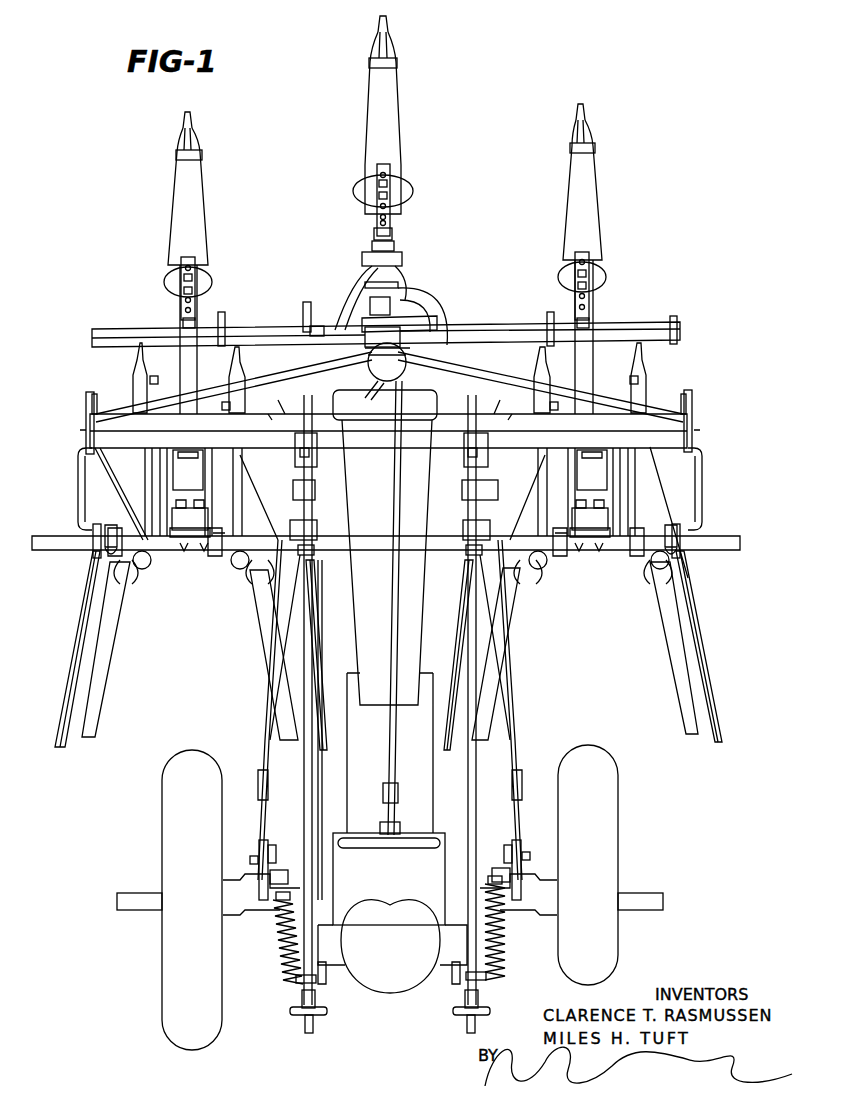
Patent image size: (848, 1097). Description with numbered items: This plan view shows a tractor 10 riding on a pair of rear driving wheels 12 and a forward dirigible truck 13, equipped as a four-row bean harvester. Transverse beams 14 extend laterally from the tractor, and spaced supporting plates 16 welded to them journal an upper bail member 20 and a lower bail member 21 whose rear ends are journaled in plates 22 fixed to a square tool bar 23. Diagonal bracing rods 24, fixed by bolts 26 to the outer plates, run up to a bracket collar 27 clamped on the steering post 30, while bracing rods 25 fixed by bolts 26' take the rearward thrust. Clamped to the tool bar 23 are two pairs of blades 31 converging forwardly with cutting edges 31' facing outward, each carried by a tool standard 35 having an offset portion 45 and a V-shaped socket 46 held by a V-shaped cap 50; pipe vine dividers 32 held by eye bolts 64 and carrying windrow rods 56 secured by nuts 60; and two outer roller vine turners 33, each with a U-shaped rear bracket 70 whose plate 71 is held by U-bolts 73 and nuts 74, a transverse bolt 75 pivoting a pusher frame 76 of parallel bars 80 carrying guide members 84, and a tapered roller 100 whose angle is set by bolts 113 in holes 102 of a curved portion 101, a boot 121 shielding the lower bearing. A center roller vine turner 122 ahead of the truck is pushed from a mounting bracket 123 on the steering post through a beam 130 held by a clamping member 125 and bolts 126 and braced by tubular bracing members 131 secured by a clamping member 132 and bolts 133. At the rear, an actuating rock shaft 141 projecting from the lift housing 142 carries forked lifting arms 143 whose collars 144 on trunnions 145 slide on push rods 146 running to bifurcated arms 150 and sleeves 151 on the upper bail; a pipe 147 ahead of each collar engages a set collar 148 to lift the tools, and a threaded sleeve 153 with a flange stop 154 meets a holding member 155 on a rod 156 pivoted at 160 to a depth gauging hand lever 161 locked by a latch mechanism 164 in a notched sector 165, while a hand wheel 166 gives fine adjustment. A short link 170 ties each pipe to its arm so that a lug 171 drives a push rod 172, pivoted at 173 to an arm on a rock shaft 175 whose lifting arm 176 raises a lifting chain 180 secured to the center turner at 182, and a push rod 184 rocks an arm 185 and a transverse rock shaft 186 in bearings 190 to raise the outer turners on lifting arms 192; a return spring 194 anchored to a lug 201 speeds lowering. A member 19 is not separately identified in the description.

The tractor 10 is at (362, 630).
The rear driving wheels 12 is at (178, 838).
The forward dirigible truck 13 is at (462, 285).
The transverse beams 14 is at (270, 414).
The supporting plates 16 is at (88, 438).
The tool bar section 19 is at (268, 330).
The upper bail member 20 is at (76, 464).
The lower bail member 21 is at (80, 430).
The plates 22 is at (95, 548).
The tool bar 23 is at (218, 530).
The diagonal bracing rods 24 is at (283, 400).
The bracing rods 25 is at (248, 380).
The bolts 26 is at (384, 416).
The bolts 26' is at (390, 386).
The bracket collar 27 is at (376, 383).
The steering post 30 is at (388, 372).
The blades 31 is at (390, 651).
The cutting edges 31' is at (391, 650).
The vine dividers 32 is at (136, 470).
The outer roller vine turners 33 is at (219, 214).
The tool standard 35 is at (148, 565).
The offset portion 45 is at (128, 580).
The V-shaped socket 46 is at (100, 560).
The V-shaped cap 50 is at (96, 538).
The windrow rods 56 is at (82, 625).
The nuts 60 is at (150, 380).
The eye bolts 64 is at (376, 543).
The U-shaped rear bracket 70 is at (170, 456).
The plate 71 is at (185, 494).
The U-bolts 73 is at (190, 552).
The nuts 74 is at (182, 512).
The transverse bolt 75 is at (390, 470).
The pusher frame 76 is at (176, 335).
The parallel bars 80 is at (180, 380).
The guide members 84 is at (200, 312).
The tapered roller 100 is at (392, 113).
The curved portion 101 is at (390, 214).
The holes 102 is at (378, 216).
The bolts 113 is at (392, 197).
The boot 121 is at (407, 44).
The center roller vine turner 122 is at (367, 99).
The mounting bracket 123 is at (430, 315).
The clamping member 125 is at (400, 269).
The bolts 126 is at (365, 285).
The beam 130 is at (305, 302).
The tubular bracing members 131 is at (360, 303).
The clamping member 132 is at (362, 258).
The bolts 133 is at (372, 246).
The actuating rock shaft 141 is at (284, 938).
The housing 142 is at (448, 936).
The forked lifting arm 143 is at (296, 978).
The collar 144 is at (300, 990).
The trunnions 145 is at (330, 975).
The push rod 146 is at (304, 1026).
The pipe 147 is at (300, 735).
The set collar 148 is at (466, 550).
The bifurcated arm 150 is at (318, 440).
The sleeve 151 is at (470, 458).
The sleeve 153 is at (462, 526).
The flange stop 154 is at (318, 482).
The holding member 155 is at (318, 488).
The rod 156 is at (262, 666).
The pivotal connection 160 is at (250, 862).
The depth gauging hand lever 161 is at (258, 800).
The latch mechanism 164 is at (258, 852).
The notched sector 165 is at (262, 890).
The hand wheel 166 is at (324, 1012).
The short link 170 is at (345, 970).
The lug 171 is at (310, 855).
The push rod 172 is at (432, 768).
The pivot 173 is at (470, 352).
The rock shaft 175 is at (437, 291).
The lifting arm 176 is at (370, 266).
The lifting chain 180 is at (395, 237).
The chain attachment 182 is at (378, 224).
The push rod 184 is at (324, 774).
The arm 185 is at (312, 330).
The transverse rock shaft 186 is at (520, 328).
The bearings 190 is at (552, 325).
The lifting arms 192 is at (196, 350).
The return spring 194 is at (278, 900).
The lug 201 is at (286, 870).